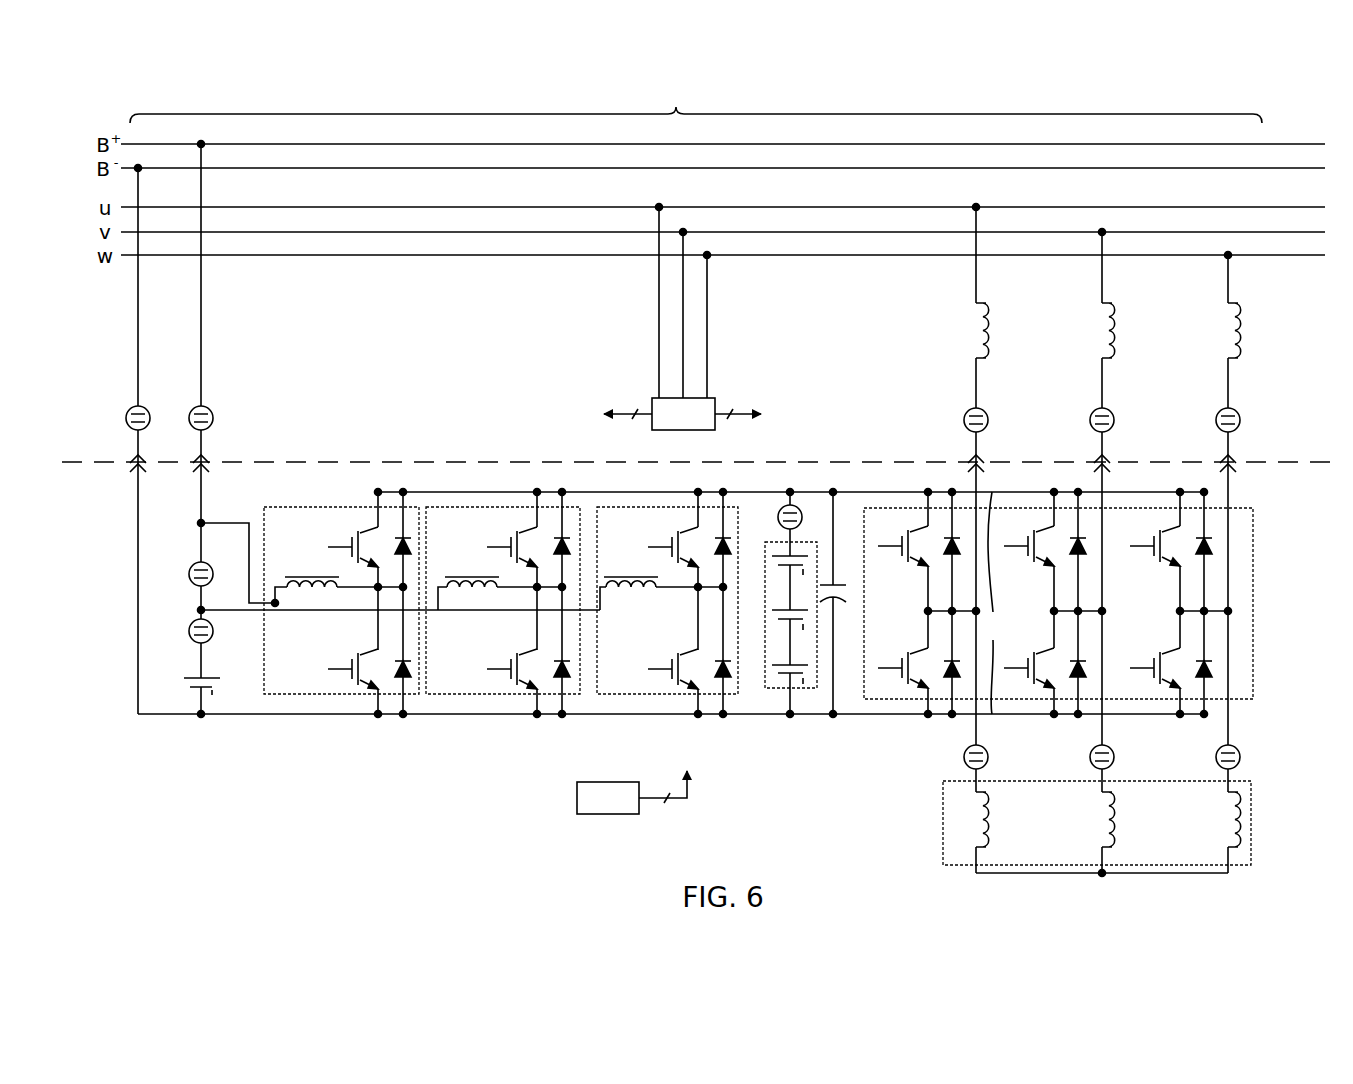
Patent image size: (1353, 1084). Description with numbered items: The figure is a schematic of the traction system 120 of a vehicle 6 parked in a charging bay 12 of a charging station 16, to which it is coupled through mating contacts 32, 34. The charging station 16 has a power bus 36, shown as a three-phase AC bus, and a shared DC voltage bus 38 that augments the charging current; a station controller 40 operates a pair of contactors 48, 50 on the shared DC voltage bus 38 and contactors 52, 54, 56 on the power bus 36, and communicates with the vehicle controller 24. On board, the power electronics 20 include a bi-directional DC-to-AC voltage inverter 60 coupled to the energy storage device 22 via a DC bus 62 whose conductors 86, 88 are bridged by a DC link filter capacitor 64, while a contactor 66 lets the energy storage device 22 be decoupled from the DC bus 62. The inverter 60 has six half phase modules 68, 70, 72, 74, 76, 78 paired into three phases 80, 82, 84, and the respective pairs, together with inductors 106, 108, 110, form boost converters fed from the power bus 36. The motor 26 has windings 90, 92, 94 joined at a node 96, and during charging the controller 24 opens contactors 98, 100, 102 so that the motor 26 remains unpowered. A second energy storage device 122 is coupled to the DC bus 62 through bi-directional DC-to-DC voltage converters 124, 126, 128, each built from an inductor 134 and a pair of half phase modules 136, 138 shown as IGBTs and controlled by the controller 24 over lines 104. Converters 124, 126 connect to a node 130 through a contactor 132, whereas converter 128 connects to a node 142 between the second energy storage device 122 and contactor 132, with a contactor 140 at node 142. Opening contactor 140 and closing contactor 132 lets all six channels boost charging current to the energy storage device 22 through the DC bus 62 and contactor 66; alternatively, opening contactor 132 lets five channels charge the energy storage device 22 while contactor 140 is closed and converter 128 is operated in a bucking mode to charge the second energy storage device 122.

The vehicle 6 is at (391, 782).
The charging bay 12 is at (696, 104).
The charging station 16 is at (112, 301).
The power electronics 20 is at (200, 745).
The energy storage device 22 is at (782, 542).
The vehicle controller 24 is at (608, 798).
The motor 26 is at (1113, 821).
The mating contact 32 is at (133, 465).
The mating contact 34 is at (132, 460).
The power bus 36 is at (412, 233).
The shared DC voltage bus 38 is at (446, 150).
The controller 40 is at (682, 318).
The contactor 48 is at (131, 408).
The contactor 50 is at (194, 408).
The contactor 52 is at (969, 411).
The contactor 54 is at (1095, 411).
The contactor 56 is at (1221, 411).
The bi-directional DC-to-AC voltage inverter 60 is at (1073, 616).
The DC bus 62 is at (991, 603).
The DC link filter capacitor 64 is at (836, 583).
The contactor 66 is at (784, 508).
The half phase module 68 is at (906, 567).
The half phase module 70 is at (906, 695).
The half phase module 72 is at (1031, 567).
The half phase module 74 is at (1031, 695).
The half phase module 76 is at (1156, 567).
The half phase module 78 is at (1156, 695).
The phase 80 is at (937, 472).
The phase 82 is at (1064, 472).
The phase 84 is at (1190, 472).
The conductor 86 is at (1170, 491).
The conductor 88 is at (1175, 716).
The winding 90 is at (988, 826).
The winding 92 is at (1114, 826).
The winding 94 is at (1232, 812).
The node 96 is at (1108, 876).
The contactor 98 is at (989, 750).
The contactor 100 is at (1115, 750).
The contactor 102 is at (1241, 750).
The lines 104 is at (678, 800).
The inductor 106 is at (985, 322).
The inductor 108 is at (1111, 322).
The inductor 110 is at (1232, 323).
The traction system 120 is at (120, 590).
The second energy storage device 122 is at (197, 677).
The bi-directional DC-to-DC voltage converter 124 is at (336, 506).
The bi-directional DC-to-DC voltage converter 126 is at (497, 506).
The bi-directional DC-to-DC voltage converter 128 is at (657, 506).
The node 130 is at (198, 521).
The contactor 132 is at (191, 566).
The inductor 134 is at (328, 576).
The half phase module 136 is at (340, 524).
The half phase module 138 is at (340, 656).
The contactor 140 is at (212, 636).
The node 142 is at (198, 609).